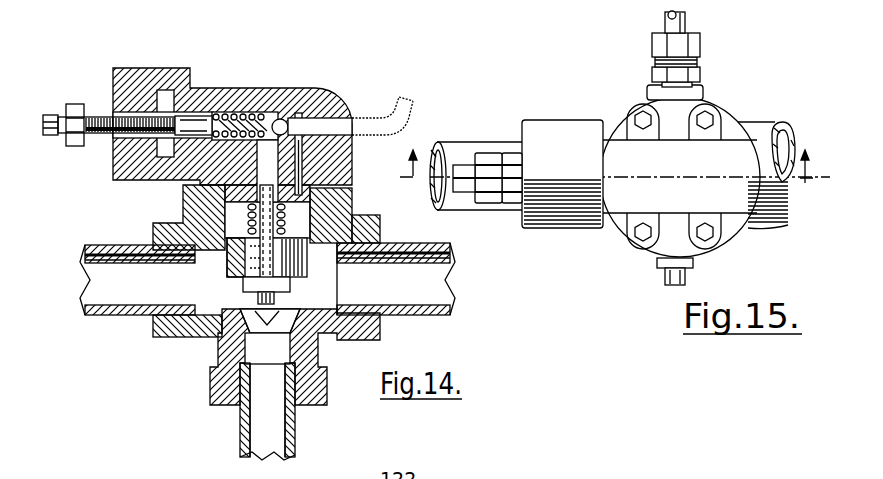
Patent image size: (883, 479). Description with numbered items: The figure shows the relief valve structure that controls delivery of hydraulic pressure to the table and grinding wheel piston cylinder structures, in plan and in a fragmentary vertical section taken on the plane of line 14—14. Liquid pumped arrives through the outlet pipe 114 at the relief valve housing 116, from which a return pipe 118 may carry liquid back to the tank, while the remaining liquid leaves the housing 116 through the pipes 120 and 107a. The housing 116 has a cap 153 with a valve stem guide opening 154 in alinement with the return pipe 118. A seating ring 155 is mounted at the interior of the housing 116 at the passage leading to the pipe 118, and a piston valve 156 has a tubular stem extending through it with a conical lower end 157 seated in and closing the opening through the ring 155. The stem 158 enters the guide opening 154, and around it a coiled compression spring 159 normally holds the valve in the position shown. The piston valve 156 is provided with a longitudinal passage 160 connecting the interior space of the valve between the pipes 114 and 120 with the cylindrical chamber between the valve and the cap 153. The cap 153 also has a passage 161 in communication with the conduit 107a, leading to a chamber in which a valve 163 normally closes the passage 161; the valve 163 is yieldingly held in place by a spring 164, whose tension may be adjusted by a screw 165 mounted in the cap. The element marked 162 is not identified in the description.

In FIG. 15, the section line 14 is at (614, 175).
In FIG. 14, the pipe 107a is at (402, 120).
In FIG. 14, the outlet pipe 114 is at (420, 313).
In FIG. 14, the relief valve housing 116 is at (335, 222).
In FIG. 15, the relief valve housing 116 is at (768, 222).
In FIG. 14, the return pipe 118 is at (297, 433).
In FIG. 15, the return pipe 118 is at (685, 24).
In FIG. 14, the pipe 120 is at (110, 318).
In FIG. 15, the pipe 120 is at (480, 210).
In FIG. 14, the cap 153 is at (320, 103).
In FIG. 15, the cap 153 is at (626, 205).
In FIG. 14, the valve stem guide opening 154 is at (190, 184).
In FIG. 14, the seating ring 155 is at (290, 287).
In FIG. 14, the piston valve 156 is at (396, 279).
In FIG. 14, the conical lower end 157 is at (240, 330).
In FIG. 14, the stem 158 is at (285, 212).
In FIG. 14, the coiled compression spring 159 is at (308, 228).
In FIG. 14, the longitudinal passage 160 is at (230, 262).
In FIG. 14, the passage 161 is at (299, 112).
In FIG. 14, the passage 162 is at (302, 168).
In FIG. 14, the valve 163 is at (278, 119).
In FIG. 14, the spring 164 is at (236, 114).
In FIG. 14, the screw 165 is at (110, 137).
In FIG. 15, the screw 165 is at (470, 166).